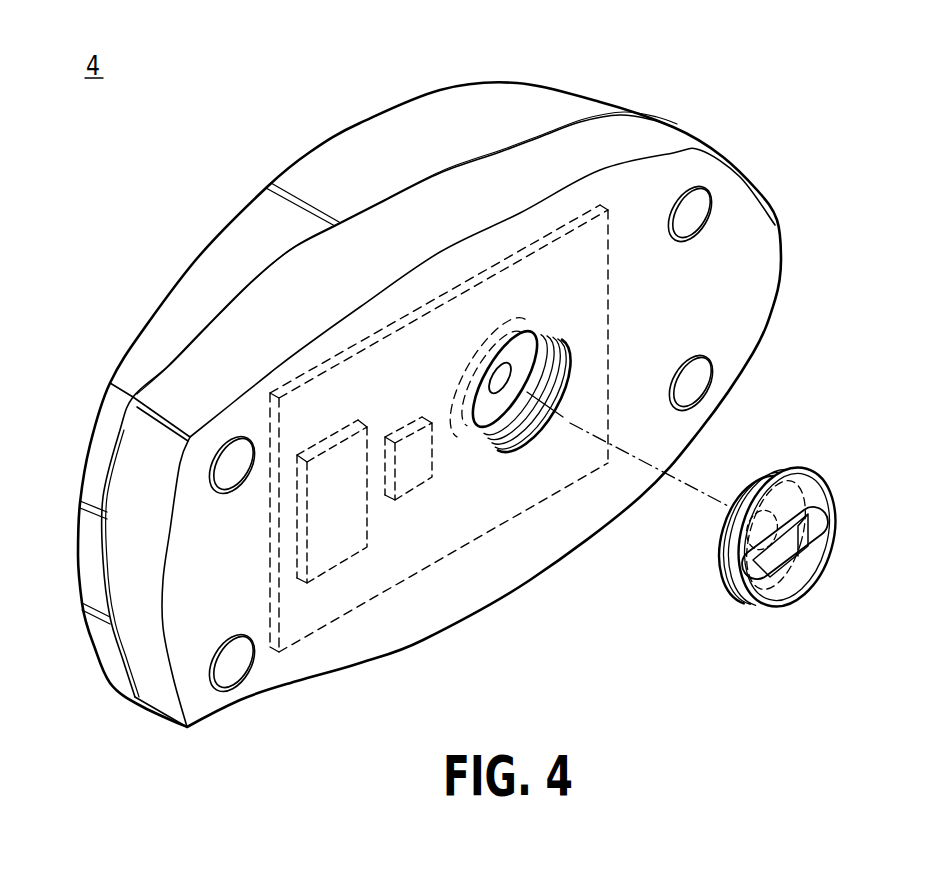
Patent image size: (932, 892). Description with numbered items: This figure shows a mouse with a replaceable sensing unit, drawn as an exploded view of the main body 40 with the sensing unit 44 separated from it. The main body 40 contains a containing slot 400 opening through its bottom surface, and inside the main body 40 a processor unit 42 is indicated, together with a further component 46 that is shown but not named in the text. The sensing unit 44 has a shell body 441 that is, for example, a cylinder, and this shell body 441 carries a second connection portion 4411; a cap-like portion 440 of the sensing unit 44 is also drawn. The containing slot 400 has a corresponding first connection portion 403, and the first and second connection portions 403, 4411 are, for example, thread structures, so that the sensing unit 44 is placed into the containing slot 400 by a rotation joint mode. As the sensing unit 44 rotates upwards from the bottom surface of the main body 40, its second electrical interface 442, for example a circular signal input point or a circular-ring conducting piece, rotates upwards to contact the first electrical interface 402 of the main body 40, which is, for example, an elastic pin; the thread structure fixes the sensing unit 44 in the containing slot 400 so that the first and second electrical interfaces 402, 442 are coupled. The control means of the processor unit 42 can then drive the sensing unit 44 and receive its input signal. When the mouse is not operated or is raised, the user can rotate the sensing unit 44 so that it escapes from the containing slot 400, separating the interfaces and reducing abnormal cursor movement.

The main body 40 is at (183, 310).
The processor unit 42 is at (338, 527).
The sensor component 46 is at (410, 463).
The containing slot 400 is at (534, 437).
The first electrical interface 402 is at (500, 378).
The first connection portion 403 is at (558, 352).
The sensing unit 44 is at (836, 516).
The cap body 440 is at (824, 580).
The shell body 441 is at (786, 606).
The second connection portion 4411 is at (717, 577).
The second electrical interface 442 is at (799, 515).